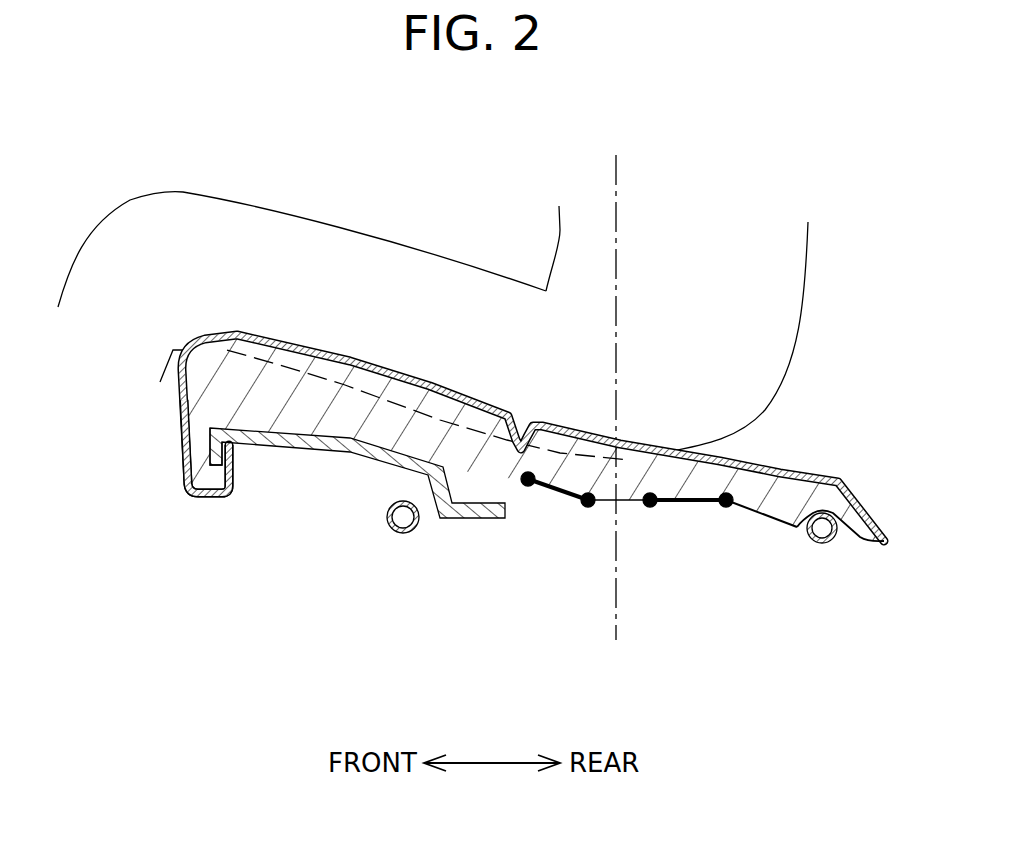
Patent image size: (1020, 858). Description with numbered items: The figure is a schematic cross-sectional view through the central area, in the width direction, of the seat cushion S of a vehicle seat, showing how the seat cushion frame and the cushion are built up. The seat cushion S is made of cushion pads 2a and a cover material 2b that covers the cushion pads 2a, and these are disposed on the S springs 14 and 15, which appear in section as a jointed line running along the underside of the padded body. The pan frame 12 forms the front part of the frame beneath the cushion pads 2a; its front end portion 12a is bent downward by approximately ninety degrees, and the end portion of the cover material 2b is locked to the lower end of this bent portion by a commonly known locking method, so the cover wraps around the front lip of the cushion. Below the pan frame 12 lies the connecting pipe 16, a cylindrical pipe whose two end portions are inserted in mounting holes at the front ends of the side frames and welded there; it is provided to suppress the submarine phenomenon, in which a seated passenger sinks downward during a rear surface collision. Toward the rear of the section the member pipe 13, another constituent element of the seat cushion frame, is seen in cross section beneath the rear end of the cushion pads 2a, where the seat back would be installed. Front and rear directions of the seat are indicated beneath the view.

The cushion pad 2a is at (242, 398).
The cover material 2b is at (178, 458).
The pan frame 12 is at (324, 461).
The front end portion 12a is at (227, 448).
The member pipe 13 is at (833, 543).
The S spring 14 is at (582, 507).
The S spring 15 is at (655, 507).
The connecting pipe 16 is at (413, 528).
The seat cushion S is at (204, 512).